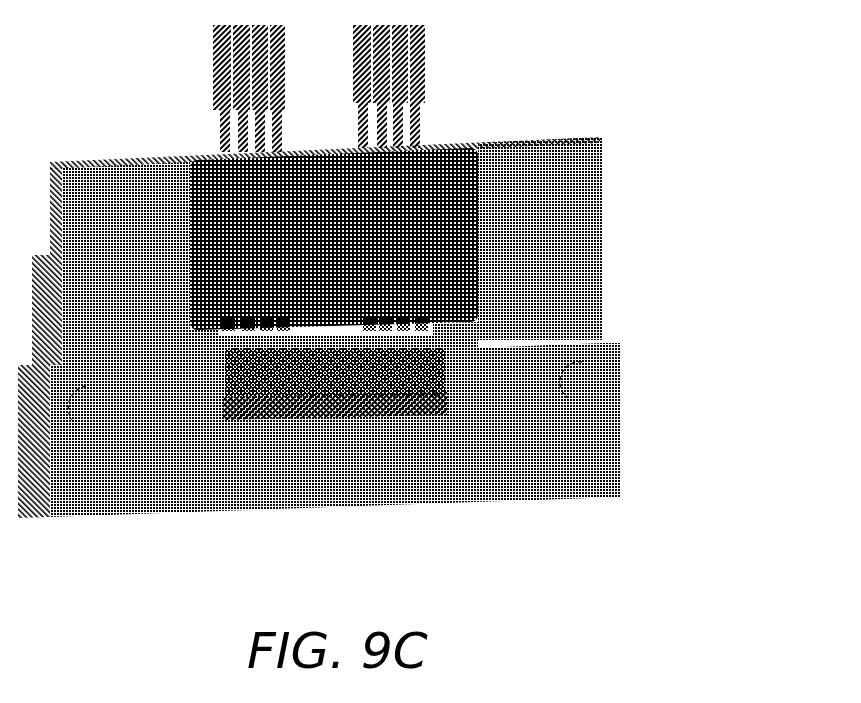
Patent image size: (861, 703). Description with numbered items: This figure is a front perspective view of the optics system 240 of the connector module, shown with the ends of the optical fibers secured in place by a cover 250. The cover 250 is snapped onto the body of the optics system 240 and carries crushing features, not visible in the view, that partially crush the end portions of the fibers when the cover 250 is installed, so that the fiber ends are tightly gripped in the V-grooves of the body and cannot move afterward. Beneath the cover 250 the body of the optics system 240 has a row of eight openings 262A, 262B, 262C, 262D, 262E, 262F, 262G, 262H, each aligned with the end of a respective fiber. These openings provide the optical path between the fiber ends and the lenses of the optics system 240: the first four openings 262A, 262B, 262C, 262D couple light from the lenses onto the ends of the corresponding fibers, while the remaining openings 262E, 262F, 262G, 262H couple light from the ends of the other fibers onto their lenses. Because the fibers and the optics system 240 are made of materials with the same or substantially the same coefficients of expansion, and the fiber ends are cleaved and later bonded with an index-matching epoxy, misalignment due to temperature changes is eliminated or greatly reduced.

The optics system 240 is at (400, 271).
The cover 250 is at (445, 239).
The opening 262A is at (532, 436).
The opening 262B is at (488, 445).
The opening 262C is at (445, 440).
The opening 262D is at (403, 440).
The opening 262E is at (156, 445).
The opening 262F is at (201, 445).
The opening 262G is at (262, 445).
The opening 262H is at (321, 441).